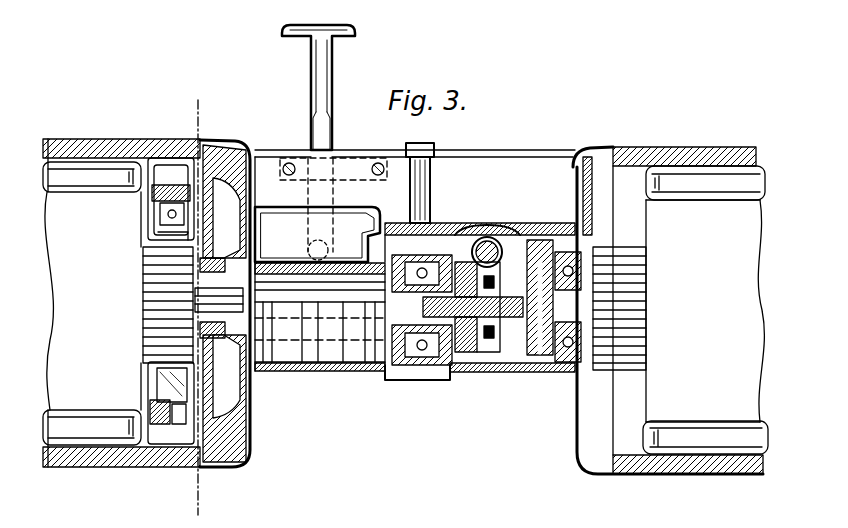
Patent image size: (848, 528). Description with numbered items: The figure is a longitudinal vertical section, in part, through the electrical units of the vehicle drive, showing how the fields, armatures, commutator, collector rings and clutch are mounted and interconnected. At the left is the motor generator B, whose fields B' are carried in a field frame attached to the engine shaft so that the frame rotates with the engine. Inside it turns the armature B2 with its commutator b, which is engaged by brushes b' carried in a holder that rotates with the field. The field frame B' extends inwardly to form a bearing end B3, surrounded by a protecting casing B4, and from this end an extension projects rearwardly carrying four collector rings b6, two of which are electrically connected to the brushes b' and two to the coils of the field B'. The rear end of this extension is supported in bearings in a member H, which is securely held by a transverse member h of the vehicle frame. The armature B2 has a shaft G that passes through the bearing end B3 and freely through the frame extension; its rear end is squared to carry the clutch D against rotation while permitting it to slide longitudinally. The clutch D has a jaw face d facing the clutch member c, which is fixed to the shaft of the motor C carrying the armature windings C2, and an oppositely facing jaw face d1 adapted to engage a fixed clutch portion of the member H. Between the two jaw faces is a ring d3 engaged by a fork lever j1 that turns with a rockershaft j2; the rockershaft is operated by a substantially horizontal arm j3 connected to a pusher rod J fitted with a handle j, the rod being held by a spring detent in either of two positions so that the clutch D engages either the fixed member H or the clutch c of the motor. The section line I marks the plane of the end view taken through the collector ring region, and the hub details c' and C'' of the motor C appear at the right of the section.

The motor generator B is at (121, 290).
The fields B' is at (88, 305).
The armature B2 is at (118, 385).
The bearing end B3 is at (240, 378).
The protecting casing B4 is at (200, 140).
The section line I is at (189, 305).
The pusher rod J is at (316, 97).
The handle j is at (332, 37).
The transverse member h is at (447, 178).
The brushes b' is at (312, 247).
The horizontal arm j3 is at (350, 237).
The commutator b is at (311, 352).
The collector rings b6 is at (328, 337).
The fork lever j1 is at (476, 222).
The rockershaft j2 is at (487, 223).
The ring d3 is at (490, 343).
The shaft G is at (458, 380).
The jaw face d1 is at (470, 350).
The jaw face d is at (533, 352).
The bearing member H is at (393, 383).
The clutch D is at (533, 222).
The clutch member c is at (593, 135).
The armature windings C2 is at (661, 387).
The motor C is at (688, 295).
The splined hub c' is at (619, 244).
The hub rim flange C'' is at (720, 289).